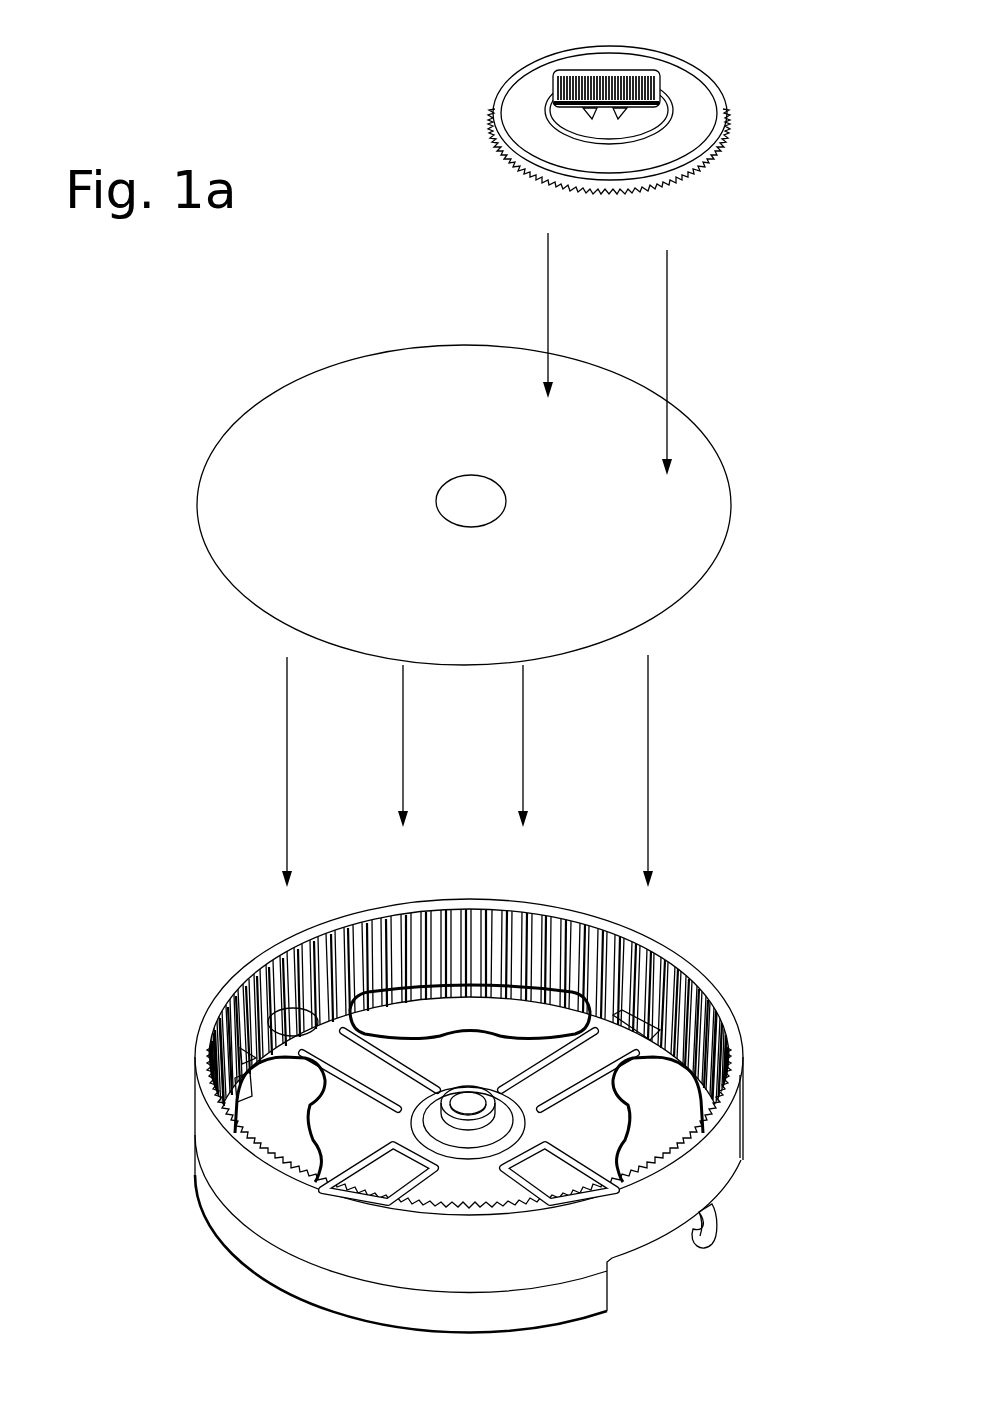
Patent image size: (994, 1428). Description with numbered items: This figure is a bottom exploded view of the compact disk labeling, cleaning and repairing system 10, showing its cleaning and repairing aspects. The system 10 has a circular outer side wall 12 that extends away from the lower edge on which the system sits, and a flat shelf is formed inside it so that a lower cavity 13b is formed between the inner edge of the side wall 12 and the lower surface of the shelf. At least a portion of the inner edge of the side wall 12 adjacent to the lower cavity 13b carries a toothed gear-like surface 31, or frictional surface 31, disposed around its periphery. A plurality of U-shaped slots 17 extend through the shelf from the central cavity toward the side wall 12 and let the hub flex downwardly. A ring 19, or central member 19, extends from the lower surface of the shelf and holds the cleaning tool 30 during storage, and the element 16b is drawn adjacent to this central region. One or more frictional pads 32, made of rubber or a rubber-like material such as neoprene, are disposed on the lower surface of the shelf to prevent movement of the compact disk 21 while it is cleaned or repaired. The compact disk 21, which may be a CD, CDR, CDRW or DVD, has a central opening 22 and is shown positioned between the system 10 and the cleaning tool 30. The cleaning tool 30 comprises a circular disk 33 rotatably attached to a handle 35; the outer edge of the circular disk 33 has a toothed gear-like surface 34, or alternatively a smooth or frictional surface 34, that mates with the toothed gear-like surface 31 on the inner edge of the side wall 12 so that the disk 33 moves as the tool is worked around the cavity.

The compact disk labeling, cleaning and repairing system 10 is at (497, 1110).
The circular outer side wall 12 is at (222, 993).
The lower cavity 13b is at (600, 1143).
The hub ring 16b is at (481, 1152).
The U-shaped slots 17 is at (358, 1093).
The ring 19 is at (468, 1097).
The compact disk 21 is at (484, 505).
The central opening 22 is at (478, 477).
The cleaning tool 30 is at (657, 99).
The toothed gear-like surface 31 is at (672, 985).
The frictional pads 32 is at (258, 1135).
The circular disk 33 is at (536, 80).
The toothed gear-like surface 34 is at (726, 120).
The handle 35 is at (597, 70).